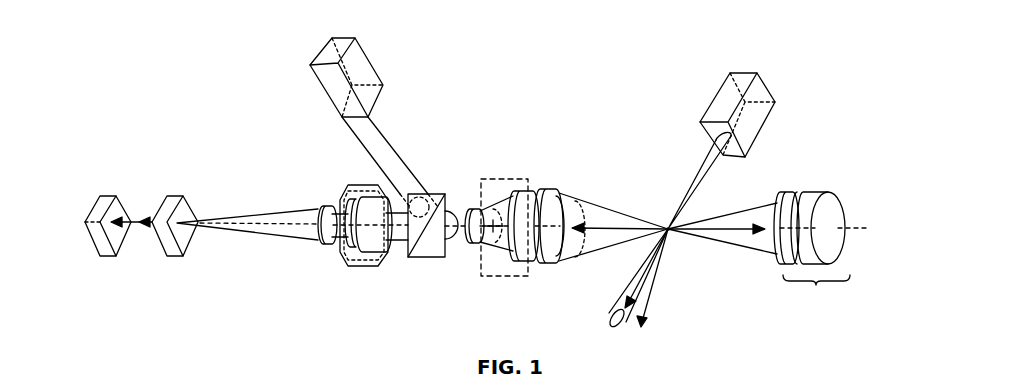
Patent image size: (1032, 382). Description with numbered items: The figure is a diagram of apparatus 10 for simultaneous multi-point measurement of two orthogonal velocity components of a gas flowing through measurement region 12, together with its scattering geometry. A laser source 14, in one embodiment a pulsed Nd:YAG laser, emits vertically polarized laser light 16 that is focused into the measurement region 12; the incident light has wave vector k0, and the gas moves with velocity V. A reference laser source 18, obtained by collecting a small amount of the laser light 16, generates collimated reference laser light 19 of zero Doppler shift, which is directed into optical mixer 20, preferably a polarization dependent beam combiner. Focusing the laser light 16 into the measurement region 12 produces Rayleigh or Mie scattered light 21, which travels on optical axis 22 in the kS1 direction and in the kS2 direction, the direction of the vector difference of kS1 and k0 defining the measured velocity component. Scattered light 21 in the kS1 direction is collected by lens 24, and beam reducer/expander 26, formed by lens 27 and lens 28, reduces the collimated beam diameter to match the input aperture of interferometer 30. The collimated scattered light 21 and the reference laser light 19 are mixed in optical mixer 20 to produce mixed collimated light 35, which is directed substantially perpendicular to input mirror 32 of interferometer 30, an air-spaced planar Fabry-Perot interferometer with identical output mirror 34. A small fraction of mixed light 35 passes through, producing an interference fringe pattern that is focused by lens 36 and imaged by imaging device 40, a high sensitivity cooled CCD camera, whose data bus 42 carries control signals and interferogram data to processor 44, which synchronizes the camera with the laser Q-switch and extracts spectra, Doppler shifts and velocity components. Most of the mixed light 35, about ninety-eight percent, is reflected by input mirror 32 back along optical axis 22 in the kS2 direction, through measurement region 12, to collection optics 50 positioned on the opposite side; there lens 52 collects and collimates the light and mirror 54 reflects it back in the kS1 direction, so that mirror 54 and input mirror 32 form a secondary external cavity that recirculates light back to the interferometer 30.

The apparatus 10 is at (492, 84).
The measurement region 12 is at (669, 231).
The laser source 14 is at (712, 105).
The laser light 16 is at (702, 165).
The reference laser source 18 is at (375, 67).
The reference laser light 19 is at (389, 120).
The optical mixer 20 is at (443, 258).
The scattered light 21 is at (588, 202).
The optical axis 22 is at (505, 226).
The lens 24 is at (555, 267).
The beam reducer/expander 26 is at (503, 277).
The lens 27 is at (530, 192).
The lens 28 is at (477, 208).
The interferometer 30 is at (357, 268).
The input mirror 32 is at (379, 266).
The output mirror 34 is at (337, 258).
The mixed collimated light 35 is at (399, 257).
The lens 36 is at (326, 208).
The imaging device 40 is at (188, 200).
The data bus 42 is at (144, 219).
The processor 44 is at (107, 195).
The collection optics 50 is at (816, 295).
The lens 52 is at (793, 192).
The mirror 54 is at (815, 192).
The scattered light wave vector kS1 is at (613, 227).
The scattered light wave vector kS2 is at (720, 229).
The incident light wave vector k0 is at (633, 274).
The velocity component V is at (652, 280).